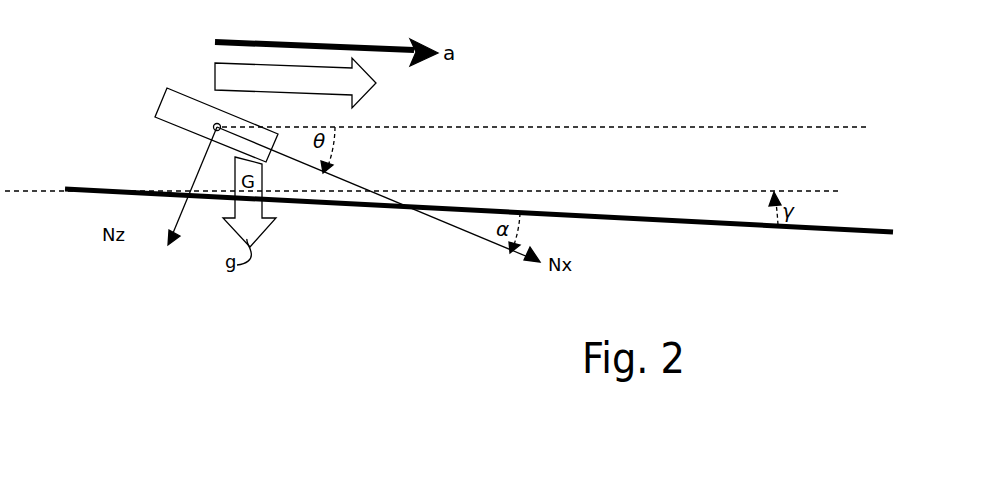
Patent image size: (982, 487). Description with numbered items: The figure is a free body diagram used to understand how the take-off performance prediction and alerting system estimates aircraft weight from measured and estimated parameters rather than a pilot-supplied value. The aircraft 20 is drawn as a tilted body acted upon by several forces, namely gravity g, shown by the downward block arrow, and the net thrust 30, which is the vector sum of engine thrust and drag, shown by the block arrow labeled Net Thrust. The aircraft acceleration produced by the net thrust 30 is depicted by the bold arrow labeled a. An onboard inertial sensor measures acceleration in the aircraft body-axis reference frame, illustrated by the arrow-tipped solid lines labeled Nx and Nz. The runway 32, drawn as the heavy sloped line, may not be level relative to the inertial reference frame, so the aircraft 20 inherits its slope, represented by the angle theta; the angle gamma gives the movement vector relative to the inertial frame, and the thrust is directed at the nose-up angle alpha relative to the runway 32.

The aircraft 20 is at (171, 94).
The net thrust 30 is at (362, 90).
The runway 32 is at (620, 221).